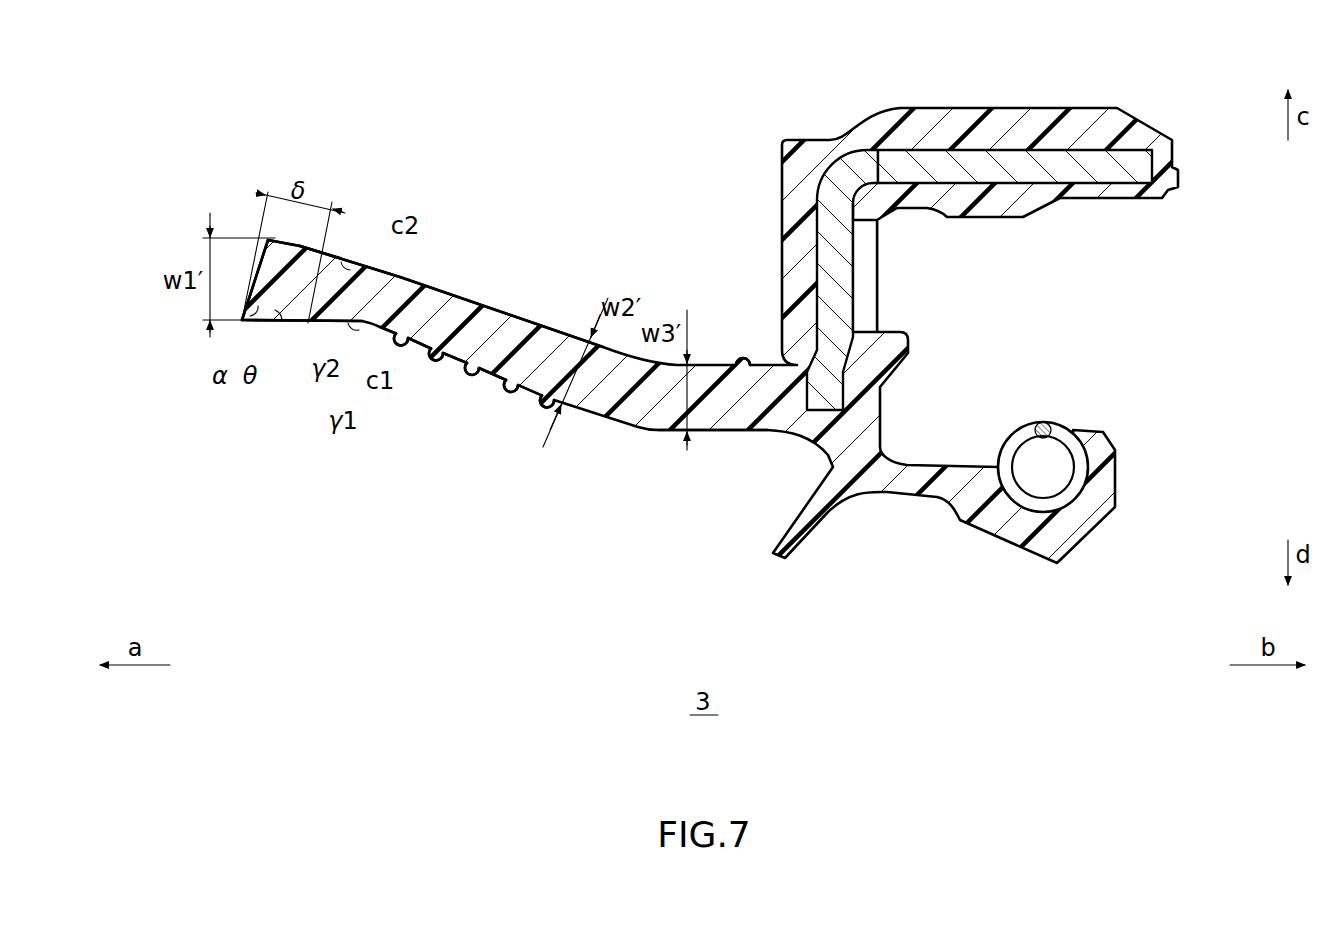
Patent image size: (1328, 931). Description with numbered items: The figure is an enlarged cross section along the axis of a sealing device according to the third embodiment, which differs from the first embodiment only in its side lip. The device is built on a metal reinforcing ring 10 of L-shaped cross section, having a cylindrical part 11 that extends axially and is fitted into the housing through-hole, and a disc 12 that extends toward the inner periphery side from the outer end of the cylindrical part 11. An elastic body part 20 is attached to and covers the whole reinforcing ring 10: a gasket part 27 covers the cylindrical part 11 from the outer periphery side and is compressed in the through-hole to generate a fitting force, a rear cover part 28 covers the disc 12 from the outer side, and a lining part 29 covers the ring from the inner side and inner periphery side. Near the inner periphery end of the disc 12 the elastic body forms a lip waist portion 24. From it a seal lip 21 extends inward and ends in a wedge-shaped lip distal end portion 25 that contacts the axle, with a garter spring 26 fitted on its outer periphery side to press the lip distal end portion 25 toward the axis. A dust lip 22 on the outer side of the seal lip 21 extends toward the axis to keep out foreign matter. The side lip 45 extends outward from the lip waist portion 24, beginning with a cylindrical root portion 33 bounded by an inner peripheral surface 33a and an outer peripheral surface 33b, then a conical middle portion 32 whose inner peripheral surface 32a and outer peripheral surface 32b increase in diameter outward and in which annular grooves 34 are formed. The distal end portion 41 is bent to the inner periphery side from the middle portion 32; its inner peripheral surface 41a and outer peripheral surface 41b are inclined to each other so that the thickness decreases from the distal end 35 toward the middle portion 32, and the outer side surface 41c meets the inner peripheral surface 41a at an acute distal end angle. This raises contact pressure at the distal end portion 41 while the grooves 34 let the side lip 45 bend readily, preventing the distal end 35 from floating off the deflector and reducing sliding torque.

The reinforcing ring 10 is at (1147, 141).
The cylindrical part 11 is at (1100, 178).
The disc 12 is at (845, 272).
The elastic body part 20 is at (765, 112).
The seal lip 21 is at (1133, 481).
The dust lip 22 is at (808, 520).
The lip waist portion 24 is at (862, 410).
The lip distal end portion 25 is at (1060, 543).
The garter spring 26 is at (1048, 425).
The gasket part 27 is at (1010, 112).
The rear cover part 28 is at (780, 185).
The lining part 29 is at (1000, 212).
The middle portion 32 is at (475, 296).
The inner peripheral surface of the middle portion 32a is at (455, 356).
The outer peripheral surface of the middle portion 32b is at (451, 293).
The root portion 33 is at (717, 362).
The inner peripheral surface of the root portion 33a is at (712, 433).
The outer peripheral surface of the root portion 33b is at (745, 373).
The groove 34 is at (402, 345).
The distal end 35 is at (254, 312).
The distal end portion 41 is at (342, 246).
The inner peripheral surface of the distal end portion 41a is at (278, 326).
The outer peripheral surface of the distal end portion 41b is at (334, 260).
The outer side surface 41c is at (252, 292).
The side lip 45 is at (185, 249).